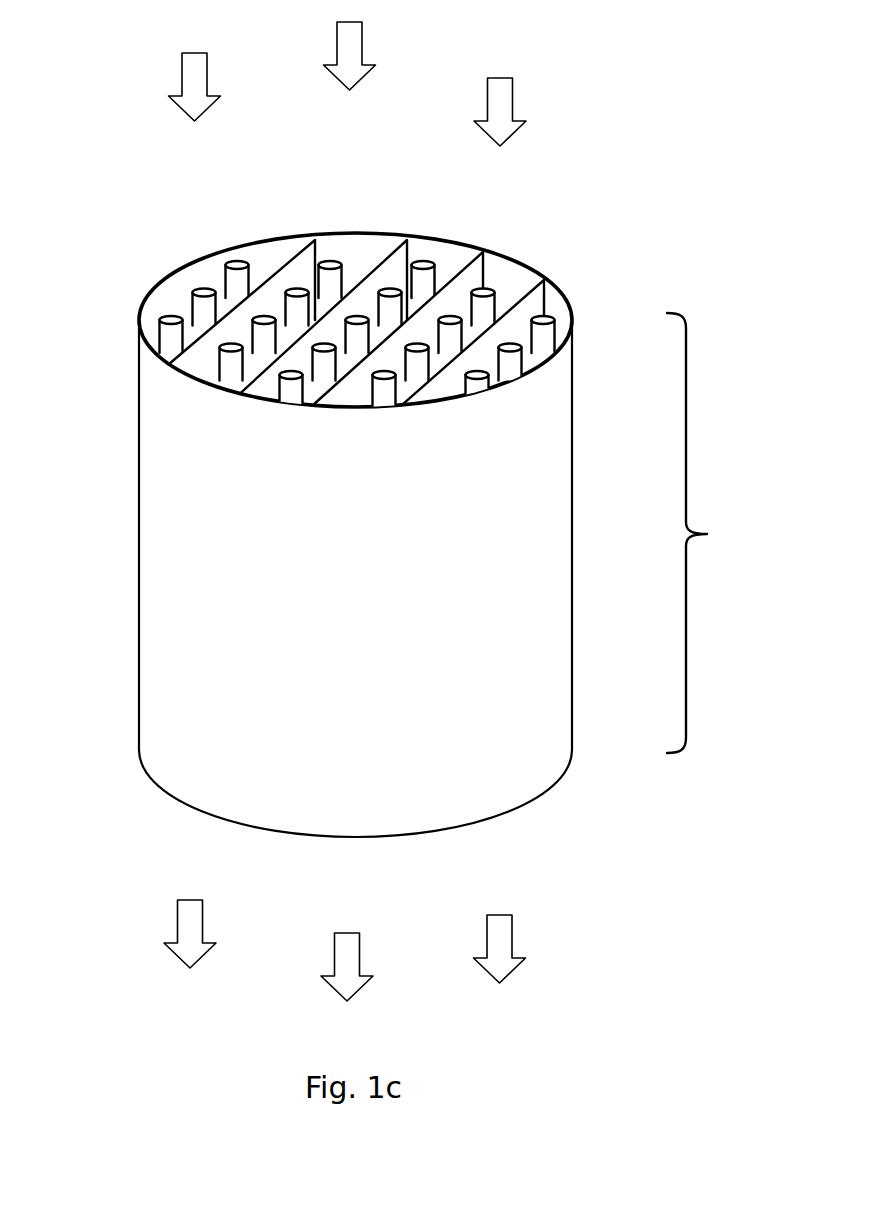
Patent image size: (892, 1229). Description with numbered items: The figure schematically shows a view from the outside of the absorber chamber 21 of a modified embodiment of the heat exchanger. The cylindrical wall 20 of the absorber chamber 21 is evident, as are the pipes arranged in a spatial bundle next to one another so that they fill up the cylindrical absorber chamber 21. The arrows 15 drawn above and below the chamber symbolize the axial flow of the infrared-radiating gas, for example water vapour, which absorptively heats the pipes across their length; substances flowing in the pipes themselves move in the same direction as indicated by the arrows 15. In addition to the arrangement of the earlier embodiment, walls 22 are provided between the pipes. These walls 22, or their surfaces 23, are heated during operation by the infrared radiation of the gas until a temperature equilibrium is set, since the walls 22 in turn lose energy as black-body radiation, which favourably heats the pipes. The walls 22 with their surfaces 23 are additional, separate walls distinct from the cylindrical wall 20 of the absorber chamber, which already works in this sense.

The arrows 15 is at (208, 72).
The cylindrical wall 20 is at (362, 666).
The absorber chamber 21 is at (715, 533).
The walls 22 is at (272, 272).
The surfaces 23 is at (294, 276).